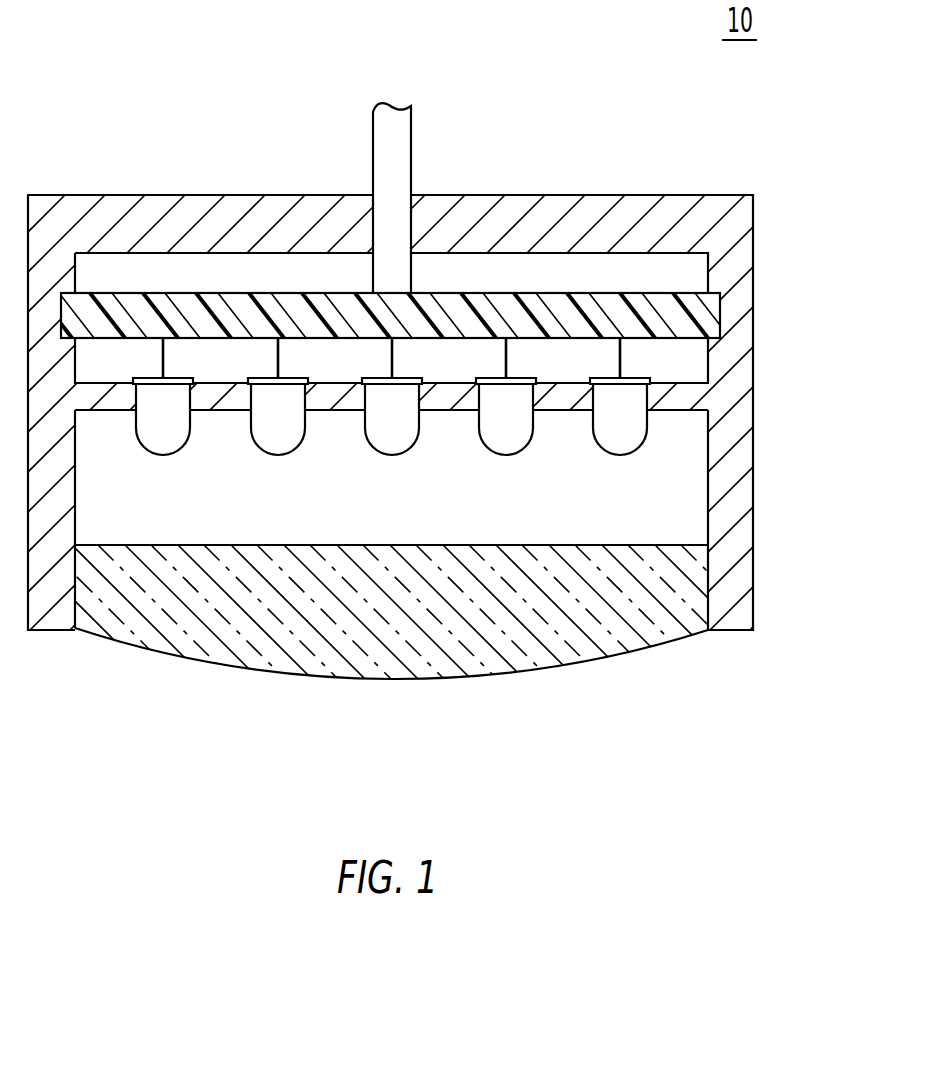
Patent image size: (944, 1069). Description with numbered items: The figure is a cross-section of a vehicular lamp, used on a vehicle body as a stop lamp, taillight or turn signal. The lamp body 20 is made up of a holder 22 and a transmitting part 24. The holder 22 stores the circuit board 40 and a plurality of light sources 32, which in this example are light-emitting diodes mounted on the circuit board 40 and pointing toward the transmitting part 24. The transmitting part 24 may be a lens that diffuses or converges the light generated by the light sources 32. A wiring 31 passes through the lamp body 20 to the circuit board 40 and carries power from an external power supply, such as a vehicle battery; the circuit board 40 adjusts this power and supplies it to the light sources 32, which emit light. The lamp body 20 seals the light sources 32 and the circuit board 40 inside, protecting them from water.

The lamp body 20 is at (472, 493).
The holder 22 is at (52, 618).
The transmitting part 24 is at (32, 727).
The wiring 31 is at (411, 147).
The light source 32 is at (166, 455).
The circuit board 40 is at (720, 317).